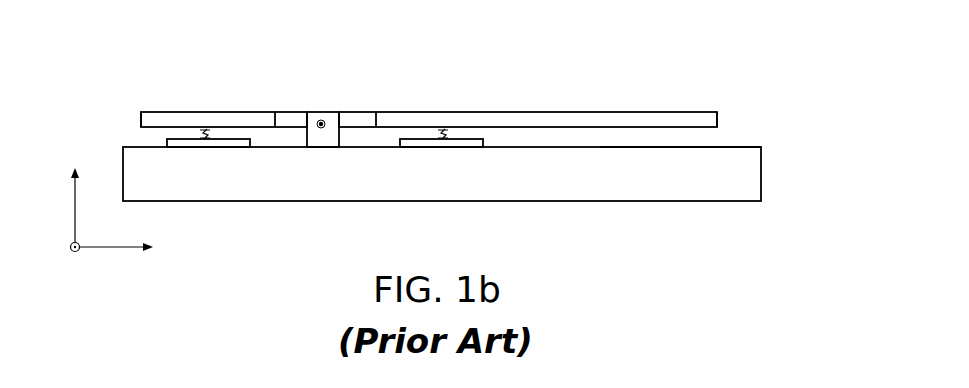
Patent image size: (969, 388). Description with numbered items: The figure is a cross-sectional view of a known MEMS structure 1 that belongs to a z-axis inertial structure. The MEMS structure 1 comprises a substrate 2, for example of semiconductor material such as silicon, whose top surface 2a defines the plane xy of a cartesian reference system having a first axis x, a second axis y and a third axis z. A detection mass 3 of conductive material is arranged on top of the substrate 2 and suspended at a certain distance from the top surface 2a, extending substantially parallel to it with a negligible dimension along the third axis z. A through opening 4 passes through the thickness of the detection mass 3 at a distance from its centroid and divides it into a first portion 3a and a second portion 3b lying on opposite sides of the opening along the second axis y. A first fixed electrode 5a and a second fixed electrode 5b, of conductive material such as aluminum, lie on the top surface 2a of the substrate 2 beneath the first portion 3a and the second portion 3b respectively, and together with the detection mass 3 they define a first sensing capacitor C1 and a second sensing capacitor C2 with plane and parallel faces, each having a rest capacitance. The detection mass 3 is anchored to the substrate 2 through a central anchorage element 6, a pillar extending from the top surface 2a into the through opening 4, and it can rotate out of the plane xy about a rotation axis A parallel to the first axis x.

The MEMS structure 1 is at (700, 86).
The substrate 2 is at (752, 184).
The top surface 2a is at (750, 148).
The detection mass 3 is at (566, 113).
The first portion 3a is at (718, 122).
The second portion 3b is at (141, 120).
The through opening 4 is at (264, 119).
The first fixed electrode 5a is at (465, 147).
The second fixed electrode 5b is at (219, 147).
The central anchorage element 6 is at (320, 132).
The rotation axis A is at (321, 120).
The first sensing capacitor C1 is at (443, 130).
The second sensing capacitor C2 is at (205, 129).